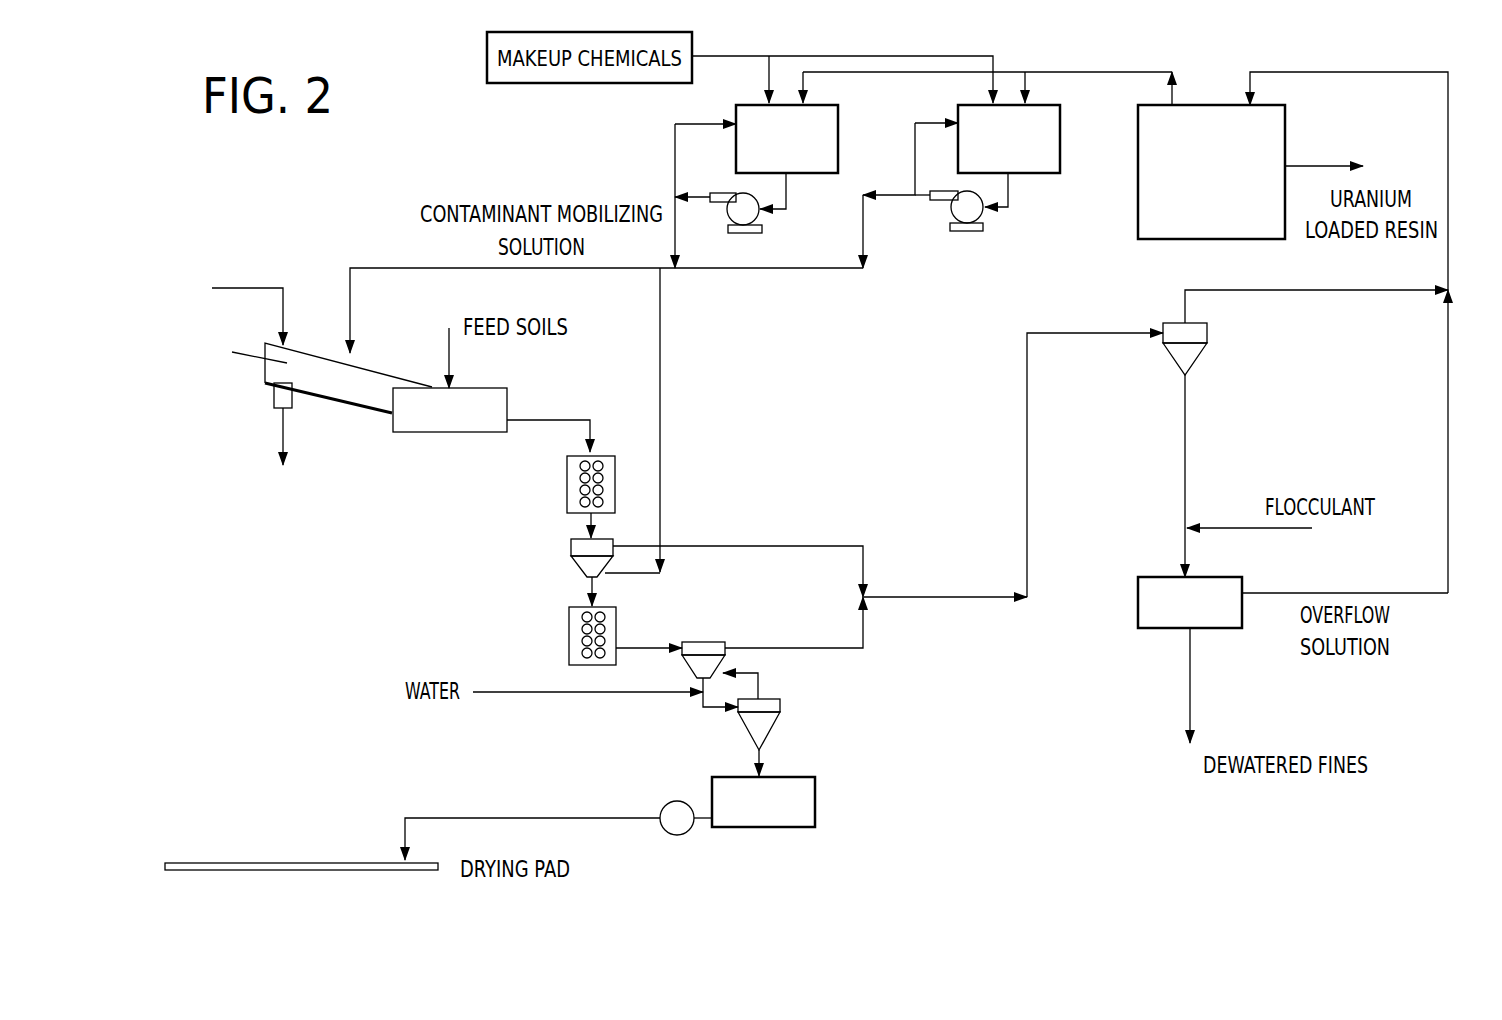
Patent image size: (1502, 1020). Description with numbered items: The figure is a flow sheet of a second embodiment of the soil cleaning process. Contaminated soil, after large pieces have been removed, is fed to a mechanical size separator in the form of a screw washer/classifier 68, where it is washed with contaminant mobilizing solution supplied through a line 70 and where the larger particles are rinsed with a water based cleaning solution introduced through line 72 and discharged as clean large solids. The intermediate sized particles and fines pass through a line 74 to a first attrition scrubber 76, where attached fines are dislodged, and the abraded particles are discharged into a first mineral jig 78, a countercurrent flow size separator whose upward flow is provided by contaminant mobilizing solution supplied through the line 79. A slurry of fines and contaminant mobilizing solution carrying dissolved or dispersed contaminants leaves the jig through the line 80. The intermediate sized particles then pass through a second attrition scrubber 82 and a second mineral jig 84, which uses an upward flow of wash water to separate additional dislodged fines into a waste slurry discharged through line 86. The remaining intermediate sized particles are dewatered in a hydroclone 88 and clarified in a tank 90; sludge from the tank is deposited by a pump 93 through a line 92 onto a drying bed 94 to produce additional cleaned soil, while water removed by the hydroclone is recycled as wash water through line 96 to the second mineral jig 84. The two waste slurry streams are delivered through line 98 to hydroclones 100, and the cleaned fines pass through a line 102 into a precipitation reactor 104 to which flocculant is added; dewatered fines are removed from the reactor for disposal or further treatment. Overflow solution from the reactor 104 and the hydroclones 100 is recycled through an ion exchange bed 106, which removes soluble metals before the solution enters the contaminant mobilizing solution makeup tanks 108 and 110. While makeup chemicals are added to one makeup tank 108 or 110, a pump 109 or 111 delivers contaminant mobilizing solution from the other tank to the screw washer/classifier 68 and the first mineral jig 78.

The screw washer/classifier 68 is at (338, 404).
The line 70 is at (413, 267).
The line 72 is at (242, 287).
The line 74 is at (540, 420).
The first attrition scrubber 76 is at (568, 498).
The first mineral jig 78 is at (578, 570).
The line 79 is at (660, 367).
The line 80 is at (743, 540).
The second attrition scrubber 82 is at (568, 612).
The mineral jig 84 is at (693, 641).
The line 86 is at (763, 645).
The hydroclone 88 is at (773, 732).
The tank 90 is at (815, 797).
The line 92 is at (513, 815).
The pump 93 is at (677, 800).
The drying bed 94 is at (332, 862).
The line 96 is at (760, 685).
The line 98 is at (930, 595).
The hydroclones 100 is at (1197, 362).
The line 102 is at (1183, 427).
The precipitation reactor 104 is at (1138, 602).
The ion exchange bed 106 is at (1285, 145).
The makeup tank 108 is at (1060, 157).
The pump 109 is at (758, 235).
The makeup tank 110 is at (838, 137).
The pump 111 is at (962, 232).